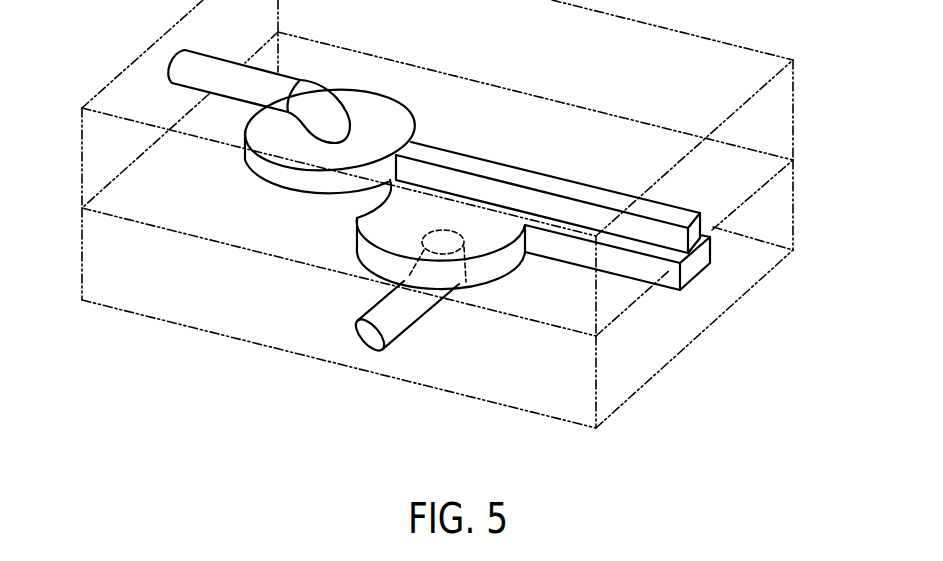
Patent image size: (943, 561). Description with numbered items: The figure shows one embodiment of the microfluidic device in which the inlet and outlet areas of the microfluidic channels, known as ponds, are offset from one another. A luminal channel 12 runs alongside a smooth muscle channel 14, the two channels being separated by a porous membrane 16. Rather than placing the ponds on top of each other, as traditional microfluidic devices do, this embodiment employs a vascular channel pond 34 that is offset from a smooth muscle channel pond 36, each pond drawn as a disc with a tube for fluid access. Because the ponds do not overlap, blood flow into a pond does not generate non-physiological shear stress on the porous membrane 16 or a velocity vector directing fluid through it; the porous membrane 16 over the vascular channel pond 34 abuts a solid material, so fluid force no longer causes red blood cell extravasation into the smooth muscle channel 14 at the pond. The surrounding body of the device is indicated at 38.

The luminal channel 12 is at (685, 197).
The smooth muscle channel 14 is at (698, 292).
The porous membrane 16 is at (750, 199).
The vascular channel pond 34 is at (247, 127).
The smooth muscle channel pond 36 is at (485, 278).
The substrate 38 is at (122, 247).